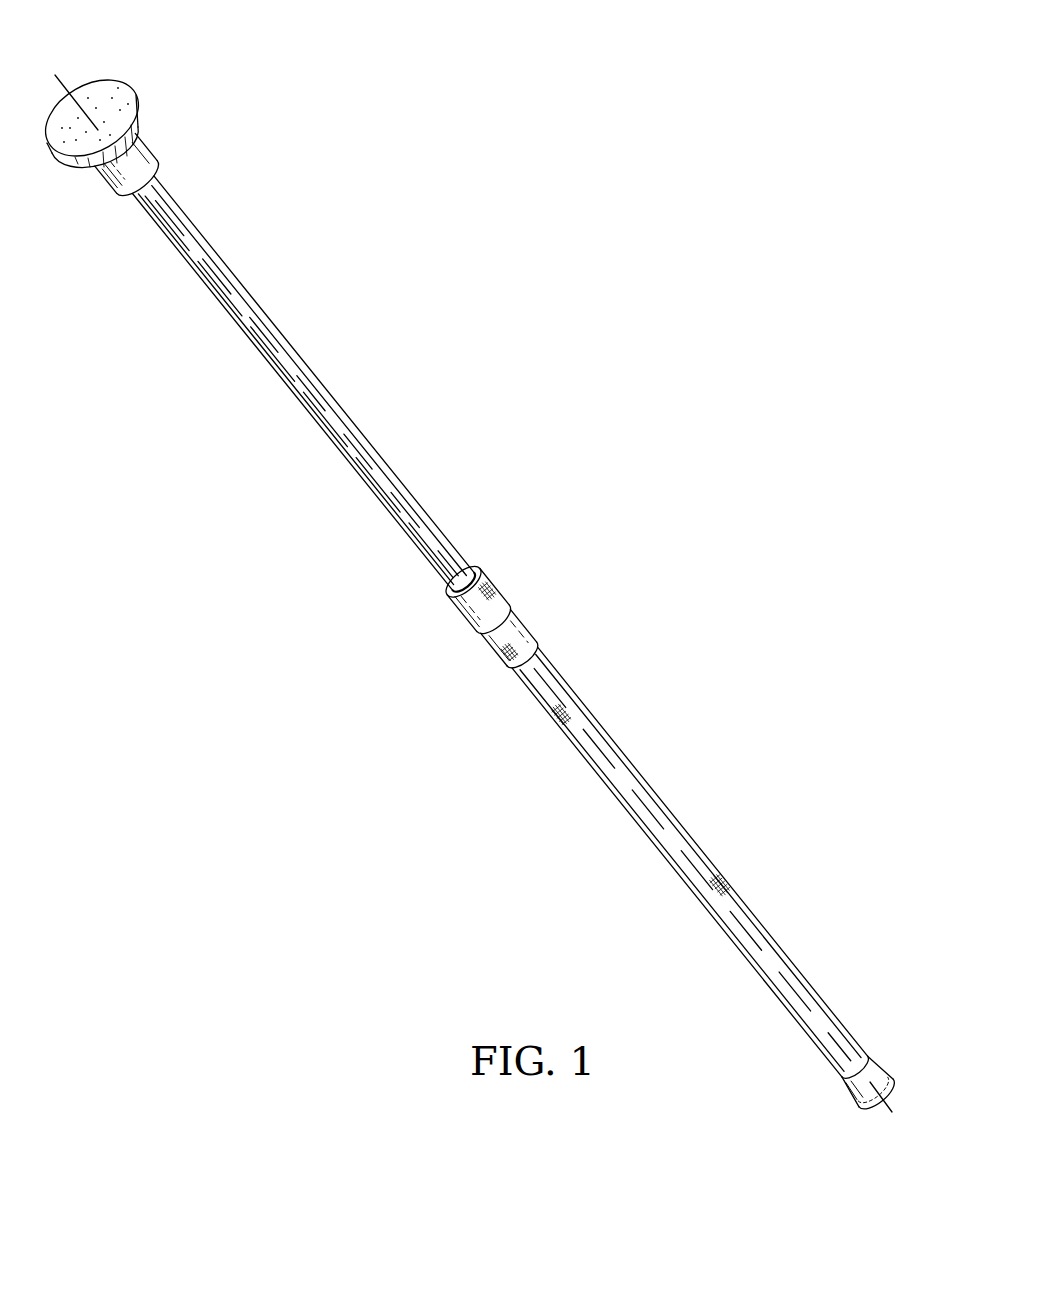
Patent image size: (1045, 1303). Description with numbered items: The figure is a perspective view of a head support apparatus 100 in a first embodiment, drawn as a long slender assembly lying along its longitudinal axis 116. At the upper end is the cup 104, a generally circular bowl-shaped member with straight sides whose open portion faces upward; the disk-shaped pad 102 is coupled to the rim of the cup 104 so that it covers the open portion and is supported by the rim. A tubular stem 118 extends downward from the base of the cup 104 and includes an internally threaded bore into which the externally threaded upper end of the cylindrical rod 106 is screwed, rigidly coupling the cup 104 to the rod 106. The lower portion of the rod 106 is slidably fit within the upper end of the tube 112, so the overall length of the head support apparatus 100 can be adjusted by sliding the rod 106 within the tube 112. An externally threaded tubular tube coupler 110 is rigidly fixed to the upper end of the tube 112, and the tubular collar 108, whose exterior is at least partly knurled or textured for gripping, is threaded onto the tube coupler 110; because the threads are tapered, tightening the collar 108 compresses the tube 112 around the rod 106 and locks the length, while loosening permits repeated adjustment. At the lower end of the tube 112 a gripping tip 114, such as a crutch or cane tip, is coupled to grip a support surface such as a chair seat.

The head support apparatus 100 is at (488, 359).
The pad 102 is at (108, 106).
The cup 104 is at (134, 131).
The rod 106 is at (267, 332).
The collar 108 is at (475, 610).
The tube coupler 110 is at (513, 648).
The tube 112 is at (673, 842).
The tip 114 is at (873, 1077).
The longitudinal axis 116 is at (85, 110).
The stem 118 is at (118, 180).